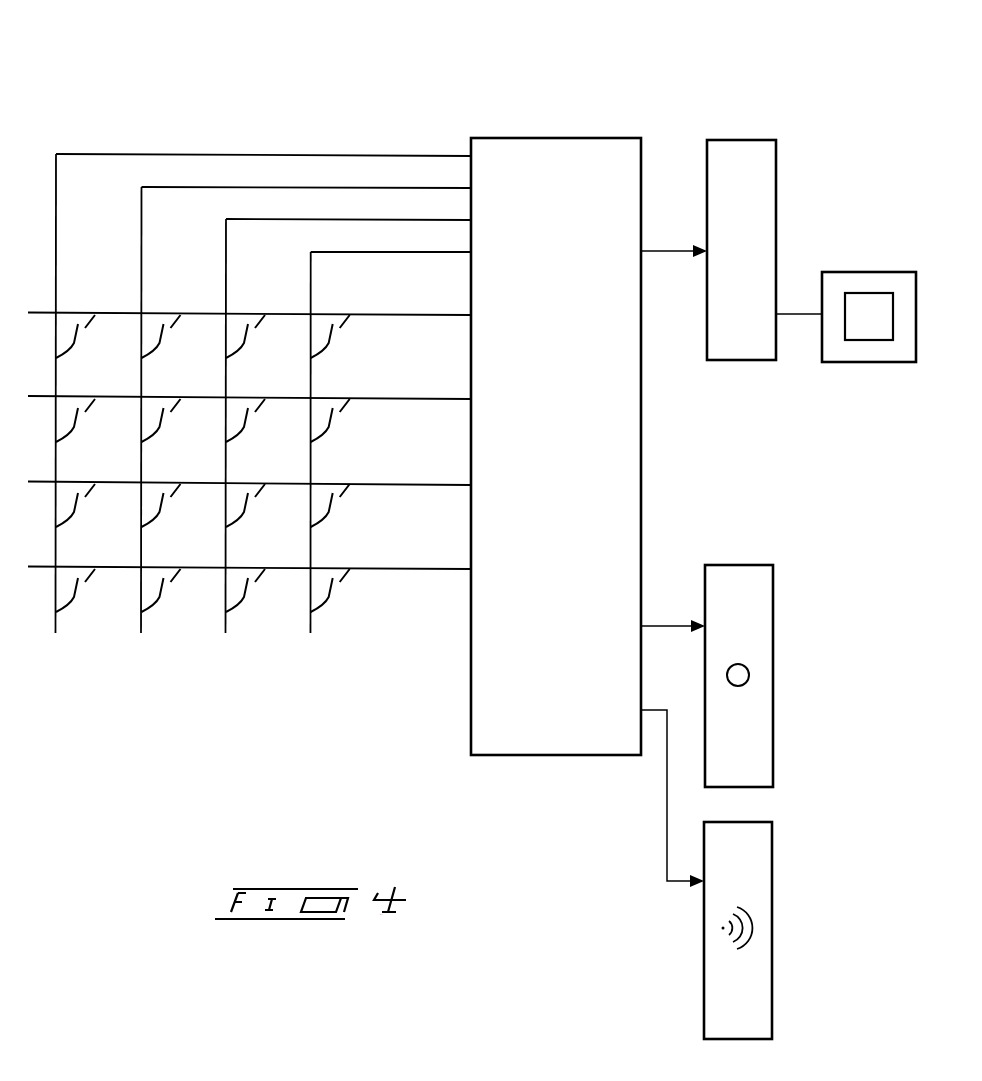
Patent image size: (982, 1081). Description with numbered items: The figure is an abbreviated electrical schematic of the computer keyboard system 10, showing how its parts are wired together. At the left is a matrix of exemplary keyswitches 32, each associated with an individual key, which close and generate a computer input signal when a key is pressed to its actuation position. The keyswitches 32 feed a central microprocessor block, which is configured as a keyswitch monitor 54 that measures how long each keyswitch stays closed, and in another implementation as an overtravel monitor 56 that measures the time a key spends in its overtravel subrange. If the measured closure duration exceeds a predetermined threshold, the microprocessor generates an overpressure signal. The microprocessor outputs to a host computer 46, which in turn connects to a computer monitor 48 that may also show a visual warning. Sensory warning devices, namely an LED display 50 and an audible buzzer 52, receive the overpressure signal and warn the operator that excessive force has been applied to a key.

The computer keyboard system 10 is at (557, 78).
The keyswitch 32 is at (145, 523).
The host computer 46 is at (756, 210).
The computer monitor 48 is at (870, 272).
The LED display 50 is at (773, 623).
The audible warning device or buzzer 52 is at (772, 874).
The keyswitch monitor 54 is at (515, 137).
The overtravel monitor 56 is at (600, 137).